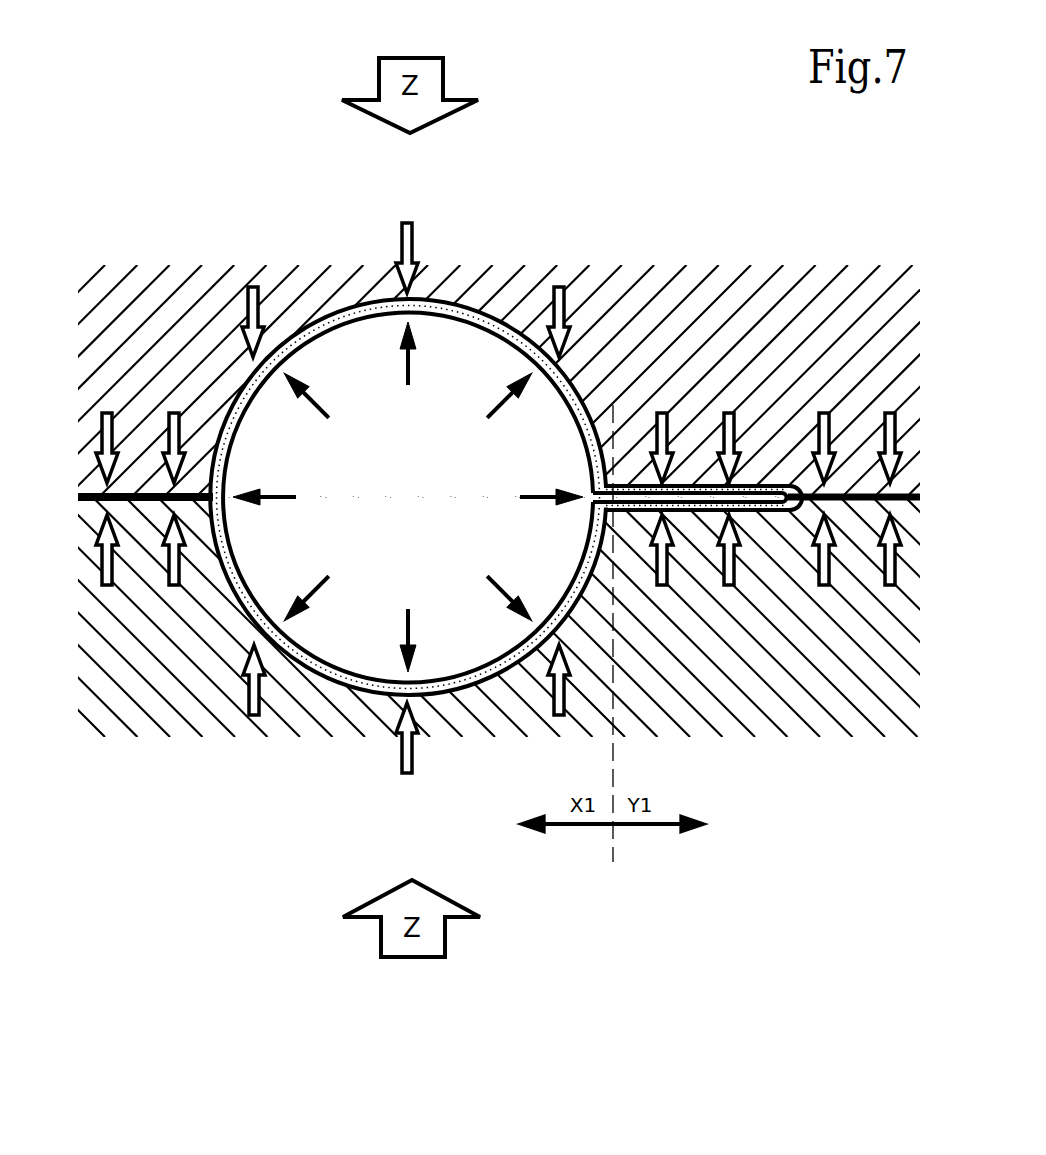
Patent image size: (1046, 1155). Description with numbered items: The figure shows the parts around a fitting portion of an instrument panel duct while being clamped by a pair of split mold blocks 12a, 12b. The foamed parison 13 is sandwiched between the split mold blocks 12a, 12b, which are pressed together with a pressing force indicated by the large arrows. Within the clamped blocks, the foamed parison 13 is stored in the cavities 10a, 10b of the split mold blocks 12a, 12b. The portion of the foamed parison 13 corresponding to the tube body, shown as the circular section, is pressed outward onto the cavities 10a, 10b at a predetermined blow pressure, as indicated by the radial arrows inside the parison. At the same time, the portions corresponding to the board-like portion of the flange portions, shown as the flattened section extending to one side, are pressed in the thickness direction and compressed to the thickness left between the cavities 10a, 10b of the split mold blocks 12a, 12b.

The split mold block 12b is at (155, 287).
The split mold block 12a is at (160, 712).
The foamed parison 13 is at (333, 317).
The cavity 10b is at (780, 486).
The cavity 10a is at (769, 511).